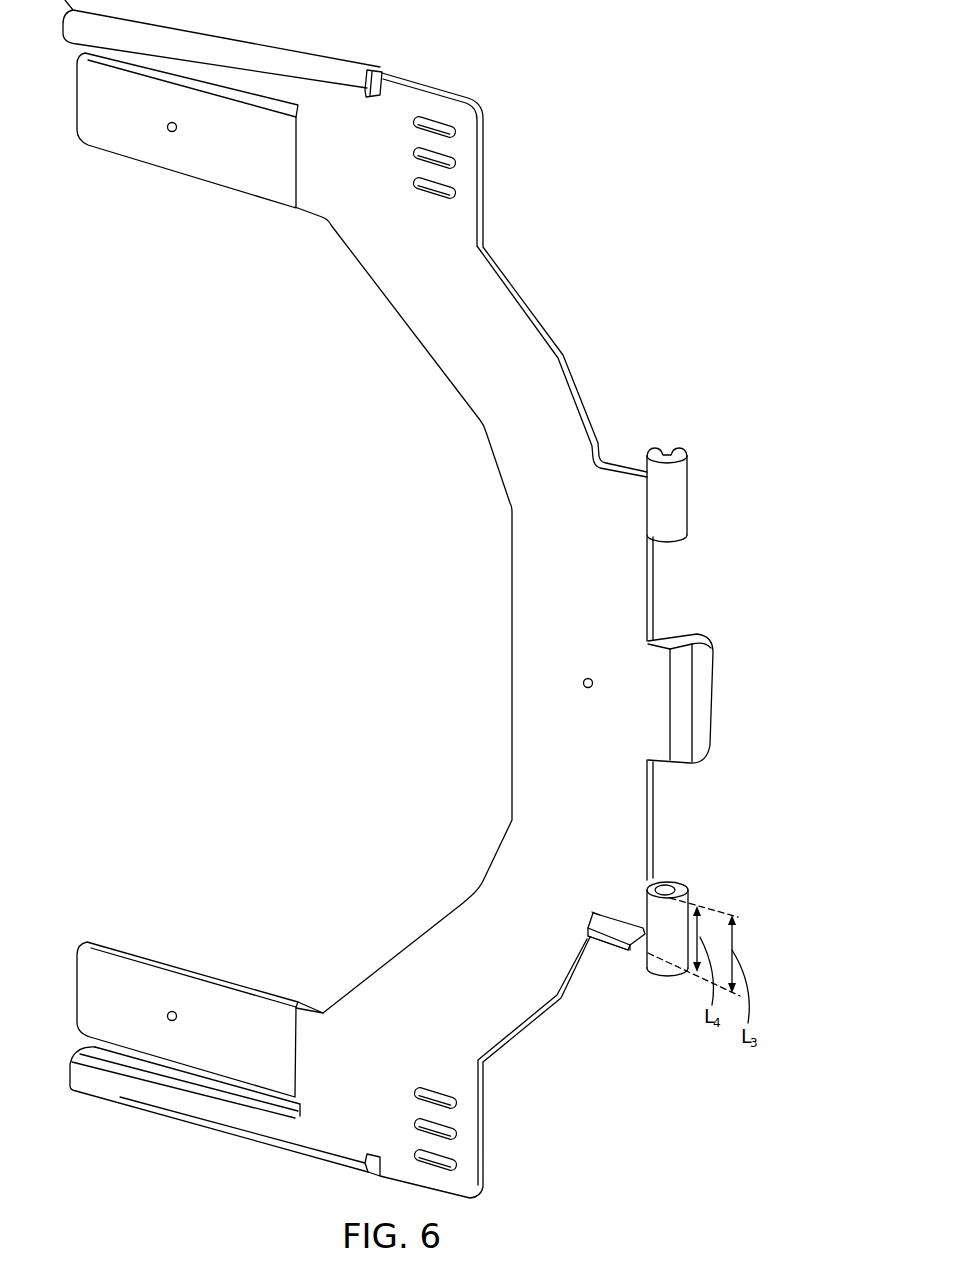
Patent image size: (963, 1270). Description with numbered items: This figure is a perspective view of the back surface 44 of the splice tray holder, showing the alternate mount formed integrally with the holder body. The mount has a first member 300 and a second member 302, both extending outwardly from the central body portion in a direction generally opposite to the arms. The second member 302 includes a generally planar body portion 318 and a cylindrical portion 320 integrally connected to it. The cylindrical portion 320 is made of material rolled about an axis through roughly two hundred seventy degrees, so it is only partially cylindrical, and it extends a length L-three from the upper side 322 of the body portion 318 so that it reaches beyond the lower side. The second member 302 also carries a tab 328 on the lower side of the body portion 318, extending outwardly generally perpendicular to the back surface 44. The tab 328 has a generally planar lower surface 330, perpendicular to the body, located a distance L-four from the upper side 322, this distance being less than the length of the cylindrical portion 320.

The back surface 44 is at (503, 360).
The first member 300 is at (694, 424).
The second member 302 is at (700, 883).
The body portion 318 is at (667, 880).
The cylindrical portion 320 is at (645, 912).
The upper side 322 is at (657, 877).
The tab 328 is at (627, 964).
The lower surface 330 is at (593, 942).